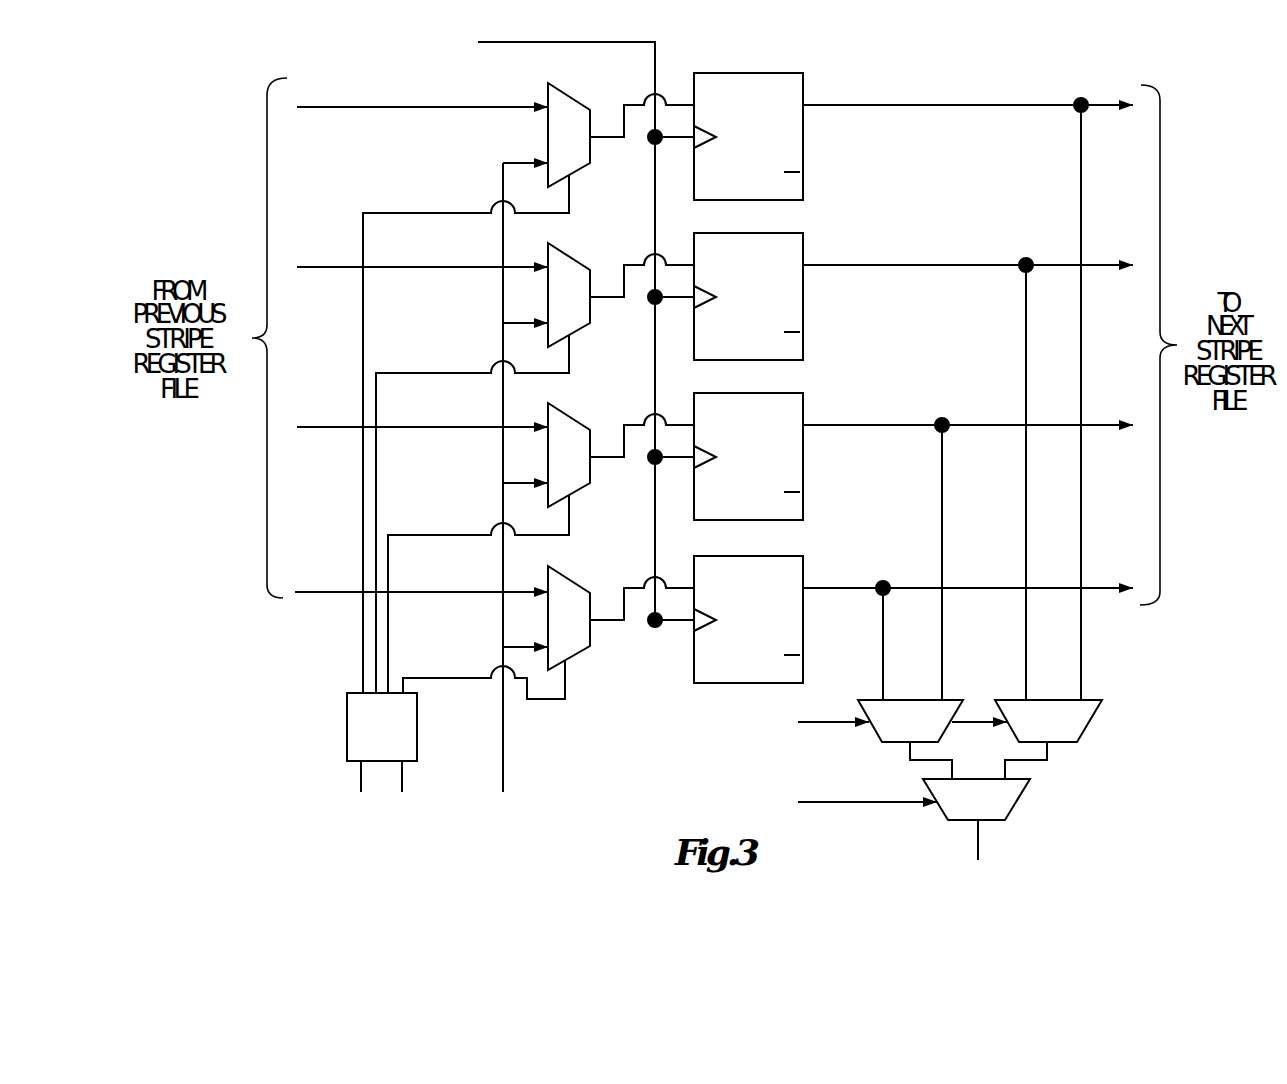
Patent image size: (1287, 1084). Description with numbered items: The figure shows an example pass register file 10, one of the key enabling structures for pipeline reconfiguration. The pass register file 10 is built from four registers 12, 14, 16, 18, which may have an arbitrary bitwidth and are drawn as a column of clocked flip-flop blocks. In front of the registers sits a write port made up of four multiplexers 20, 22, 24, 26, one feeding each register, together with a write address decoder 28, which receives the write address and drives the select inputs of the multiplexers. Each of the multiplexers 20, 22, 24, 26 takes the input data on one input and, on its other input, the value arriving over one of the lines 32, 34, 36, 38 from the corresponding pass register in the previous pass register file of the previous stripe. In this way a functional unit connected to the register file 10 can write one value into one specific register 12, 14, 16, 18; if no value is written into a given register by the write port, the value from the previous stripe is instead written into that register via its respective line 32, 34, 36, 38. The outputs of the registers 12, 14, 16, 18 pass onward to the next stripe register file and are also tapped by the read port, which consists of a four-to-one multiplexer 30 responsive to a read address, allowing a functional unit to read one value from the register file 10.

The pass register file 10 is at (942, 72).
The register 12 is at (803, 152).
The register 14 is at (803, 312).
The register 16 is at (803, 472).
The register 18 is at (803, 635).
The multiplexer 20 is at (572, 97).
The multiplexer 22 is at (572, 257).
The multiplexer 24 is at (572, 417).
The multiplexer 26 is at (570, 579).
The write address decoder 28 is at (347, 728).
The 4-to-1 multiplexer 30 is at (1045, 772).
The line 32 is at (348, 100).
The line 34 is at (332, 260).
The line 36 is at (331, 425).
The line 38 is at (332, 590).